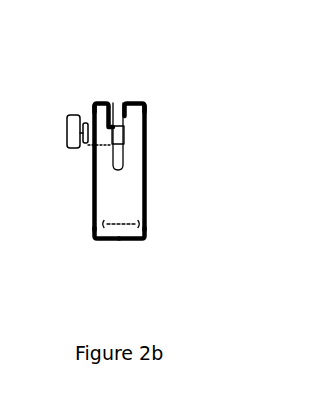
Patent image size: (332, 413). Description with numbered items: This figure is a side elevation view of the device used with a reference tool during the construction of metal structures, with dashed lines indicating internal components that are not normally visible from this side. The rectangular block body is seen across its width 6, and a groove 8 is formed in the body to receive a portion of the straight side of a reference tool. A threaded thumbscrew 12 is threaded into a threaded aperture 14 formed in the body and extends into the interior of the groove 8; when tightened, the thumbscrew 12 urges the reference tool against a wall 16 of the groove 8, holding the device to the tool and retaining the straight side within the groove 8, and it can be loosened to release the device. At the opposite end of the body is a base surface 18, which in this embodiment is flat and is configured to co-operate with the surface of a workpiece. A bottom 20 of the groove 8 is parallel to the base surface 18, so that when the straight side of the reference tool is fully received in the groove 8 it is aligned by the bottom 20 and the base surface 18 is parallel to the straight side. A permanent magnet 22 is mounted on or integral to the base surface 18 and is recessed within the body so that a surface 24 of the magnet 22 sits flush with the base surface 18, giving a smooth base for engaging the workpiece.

The width 6 is at (93, 172).
The groove 8 is at (132, 101).
The threaded thumbscrew 12 is at (71, 142).
The threaded aperture 14 is at (107, 126).
The wall 16 is at (123, 143).
The base surface 18 is at (137, 242).
The bottom 20 is at (122, 171).
The permanent magnet 22 is at (122, 222).
The surface 24 is at (105, 240).